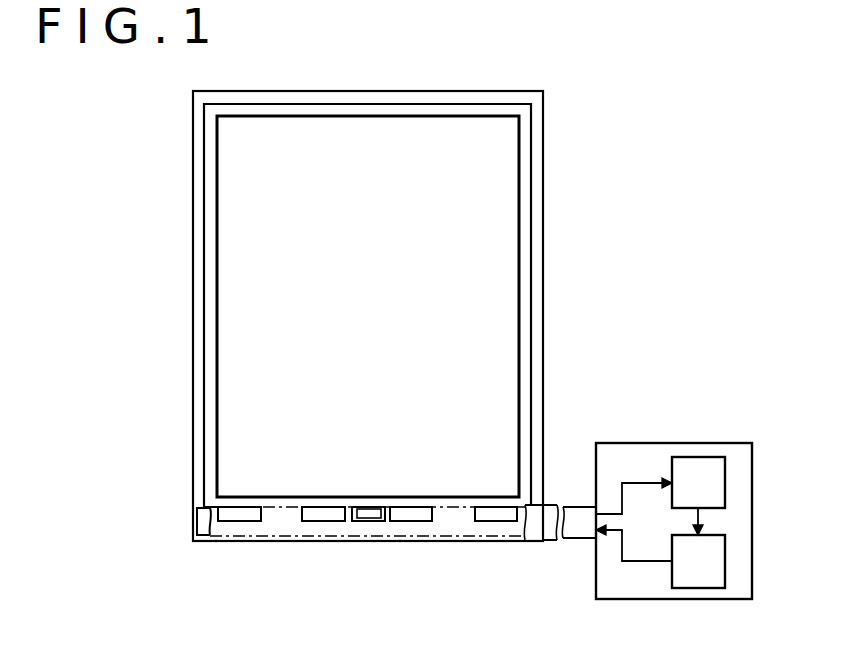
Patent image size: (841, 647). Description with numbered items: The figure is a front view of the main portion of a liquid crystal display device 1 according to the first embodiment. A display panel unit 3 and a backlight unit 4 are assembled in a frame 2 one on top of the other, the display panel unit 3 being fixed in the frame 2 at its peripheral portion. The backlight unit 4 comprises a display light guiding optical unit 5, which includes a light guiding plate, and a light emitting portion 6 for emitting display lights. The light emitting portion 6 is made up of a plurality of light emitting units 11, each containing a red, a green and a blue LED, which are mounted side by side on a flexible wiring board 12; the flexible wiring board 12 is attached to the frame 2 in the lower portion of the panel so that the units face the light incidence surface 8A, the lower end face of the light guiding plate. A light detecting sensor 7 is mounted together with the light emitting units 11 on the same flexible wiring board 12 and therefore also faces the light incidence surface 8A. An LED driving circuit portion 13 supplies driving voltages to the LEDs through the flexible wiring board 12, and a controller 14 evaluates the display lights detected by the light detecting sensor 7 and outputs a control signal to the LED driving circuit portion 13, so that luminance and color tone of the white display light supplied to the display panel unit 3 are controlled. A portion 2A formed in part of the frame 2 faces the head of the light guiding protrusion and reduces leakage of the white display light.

The liquid crystal display device 1 is at (648, 147).
The frame 2 is at (192, 207).
The portion of the frame 2A is at (413, 541).
The display panel unit 3 is at (253, 267).
The backlight unit 4 is at (198, 307).
The display light guiding optical unit 5 is at (347, 517).
The light emitting portion 6 is at (174, 519).
The light detecting sensor 7 is at (375, 517).
The light incidence surface 8A is at (238, 507).
The light emitting units 11 is at (240, 517).
The flexible wiring board 12 is at (553, 520).
The LED driving circuit portion 13 is at (717, 560).
The controller 14 is at (717, 481).